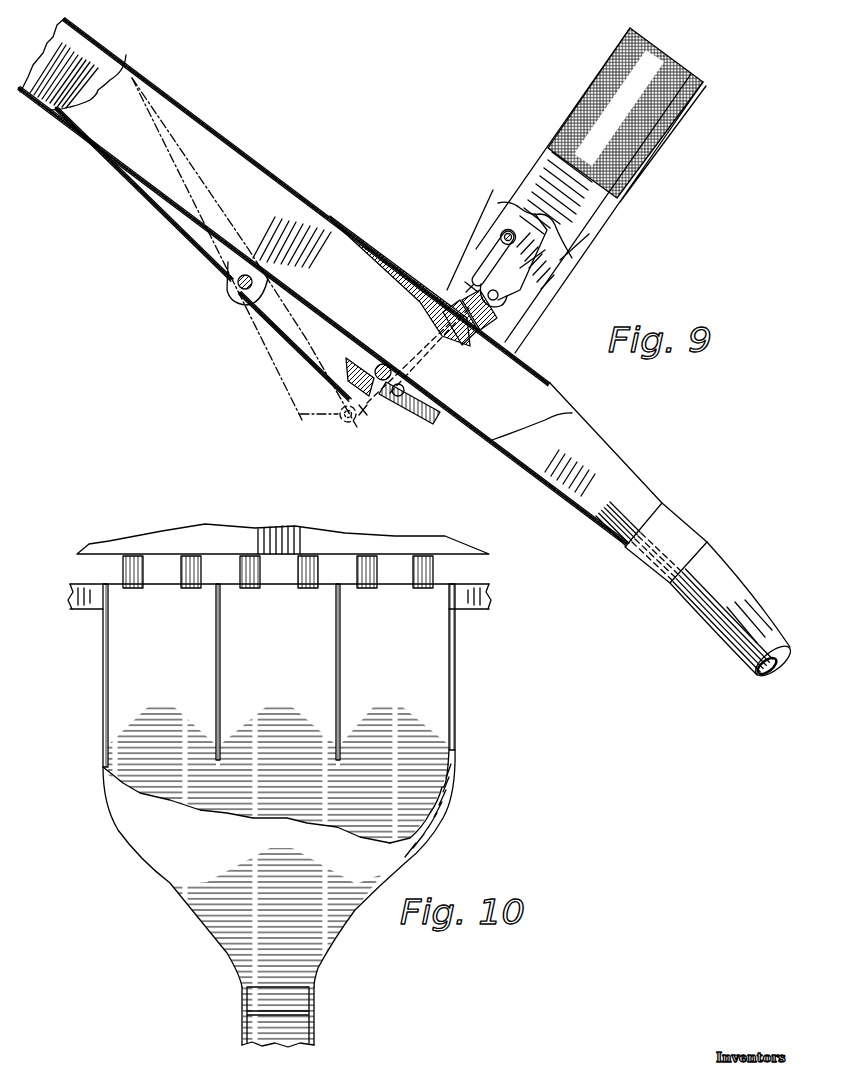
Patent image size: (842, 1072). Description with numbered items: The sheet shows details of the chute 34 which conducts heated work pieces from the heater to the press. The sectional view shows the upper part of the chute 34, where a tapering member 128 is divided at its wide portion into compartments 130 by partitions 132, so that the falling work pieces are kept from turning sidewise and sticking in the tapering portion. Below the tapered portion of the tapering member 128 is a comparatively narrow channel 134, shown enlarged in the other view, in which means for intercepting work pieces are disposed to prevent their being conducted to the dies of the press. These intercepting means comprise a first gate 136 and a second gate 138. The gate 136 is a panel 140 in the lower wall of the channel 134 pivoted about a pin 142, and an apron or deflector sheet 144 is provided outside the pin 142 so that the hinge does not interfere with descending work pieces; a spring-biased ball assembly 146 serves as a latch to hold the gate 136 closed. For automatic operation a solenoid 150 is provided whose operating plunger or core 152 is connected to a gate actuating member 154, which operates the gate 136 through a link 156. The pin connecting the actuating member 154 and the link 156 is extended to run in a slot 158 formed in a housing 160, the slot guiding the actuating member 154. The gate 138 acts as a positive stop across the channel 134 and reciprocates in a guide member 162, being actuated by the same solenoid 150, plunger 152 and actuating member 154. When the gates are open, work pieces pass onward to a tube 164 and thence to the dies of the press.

In FIG. 9, the channel 134 is at (110, 62).
In FIG. 9, the gate 136 is at (178, 232).
In FIG. 9, the gate 138 is at (500, 302).
In FIG. 9, the panel 140 is at (153, 188).
In FIG. 9, the pin 142 is at (237, 285).
In FIG. 9, the apron or deflector sheet 144 is at (284, 336).
In FIG. 9, the spring-biased ball assembly 146 is at (405, 412).
In FIG. 9, the solenoid 150 is at (588, 107).
In FIG. 9, the operating plunger or core 152 is at (520, 216).
In FIG. 9, the gate actuating member 154 is at (521, 268).
In FIG. 9, the link 156 is at (366, 424).
In FIG. 9, the slot 158 is at (500, 240).
In FIG. 9, the housing 160 is at (586, 232).
In FIG. 9, the guide member 162 is at (500, 345).
In FIG. 9, the tube 164 is at (737, 600).
In FIG. 10, the compartments 130 is at (222, 598).
In FIG. 10, the partitions 132 is at (336, 672).
In FIG. 10, the chute 34 is at (138, 850).
In FIG. 10, the tapering member 128 is at (200, 875).